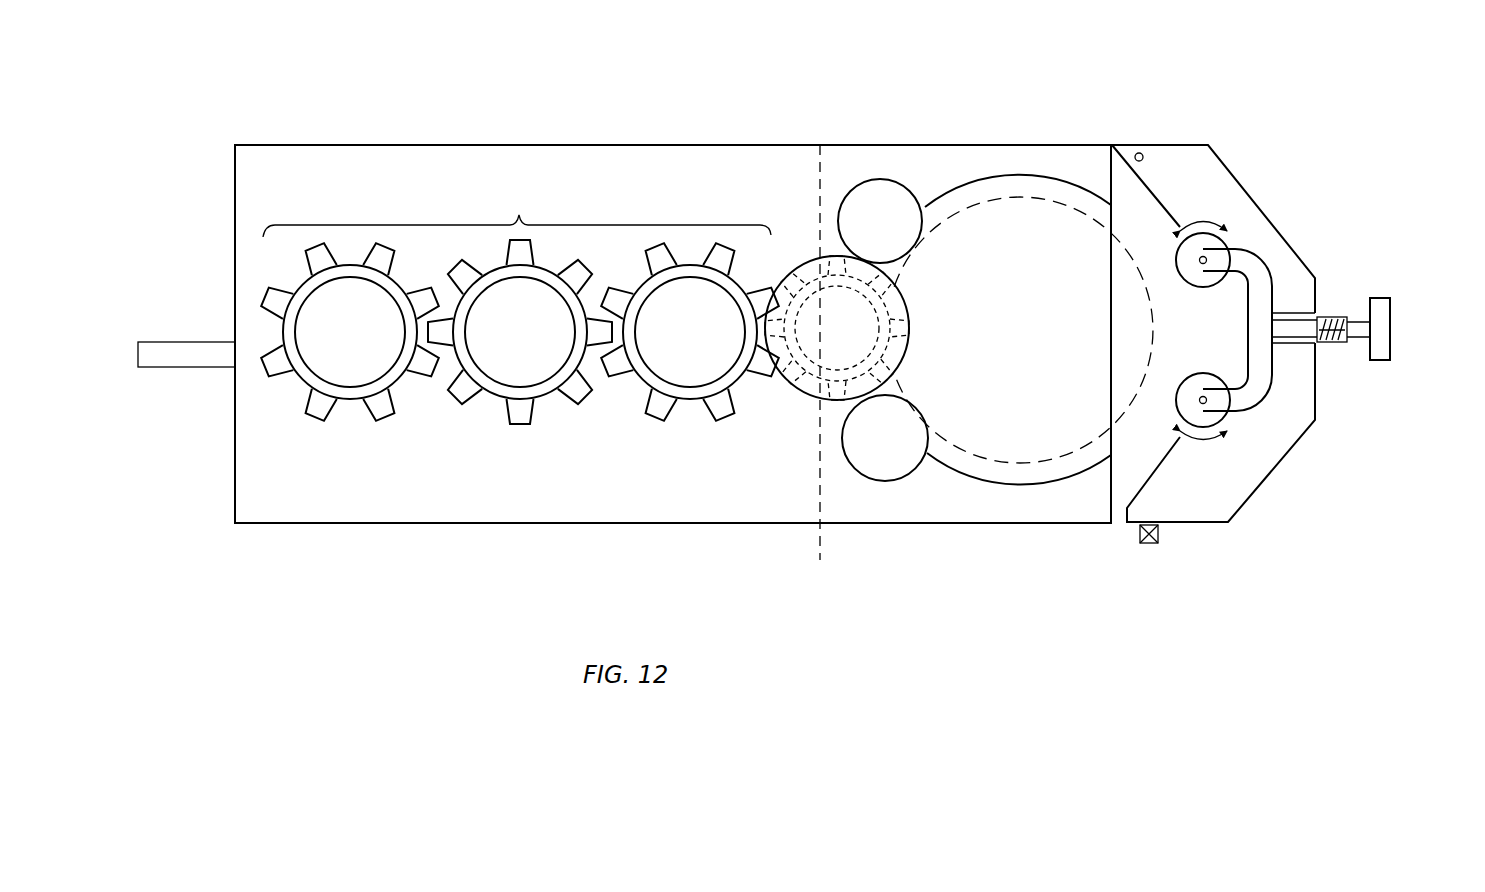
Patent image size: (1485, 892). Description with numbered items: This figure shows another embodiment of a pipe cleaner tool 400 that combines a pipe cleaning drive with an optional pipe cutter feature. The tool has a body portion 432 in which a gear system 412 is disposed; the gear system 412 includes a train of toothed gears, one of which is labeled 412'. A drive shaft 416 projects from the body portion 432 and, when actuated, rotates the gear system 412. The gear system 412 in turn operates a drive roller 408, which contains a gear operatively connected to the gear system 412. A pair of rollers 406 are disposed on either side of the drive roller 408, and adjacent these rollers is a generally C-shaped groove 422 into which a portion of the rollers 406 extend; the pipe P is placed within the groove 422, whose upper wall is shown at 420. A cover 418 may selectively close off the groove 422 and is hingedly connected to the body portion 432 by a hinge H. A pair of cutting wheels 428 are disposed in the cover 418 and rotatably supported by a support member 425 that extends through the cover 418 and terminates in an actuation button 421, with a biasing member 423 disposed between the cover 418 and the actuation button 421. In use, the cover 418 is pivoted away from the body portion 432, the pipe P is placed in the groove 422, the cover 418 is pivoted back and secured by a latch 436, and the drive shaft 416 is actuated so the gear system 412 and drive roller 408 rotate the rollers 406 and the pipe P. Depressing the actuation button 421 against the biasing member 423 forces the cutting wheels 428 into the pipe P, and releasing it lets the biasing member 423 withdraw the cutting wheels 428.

The pipe cleaner tool 400 is at (457, 580).
The body portion 432 is at (260, 160).
The drive shaft 416 is at (155, 350).
The gear system 412 is at (516, 307).
The first gear 412' is at (346, 332).
The drive roller 408 is at (830, 355).
The rollers 406 is at (884, 203).
The upper shell 420 is at (1027, 158).
The groove 422 is at (1060, 468).
The hinge H is at (1142, 152).
The cover 418 is at (1215, 512).
The cutting wheels 428 is at (1210, 245).
The support member 425 is at (1262, 300).
The biasing member 423 is at (1332, 342).
The actuation button 421 is at (1375, 330).
The latch 436 is at (1150, 545).